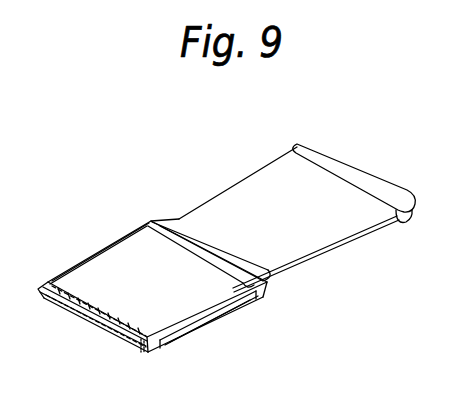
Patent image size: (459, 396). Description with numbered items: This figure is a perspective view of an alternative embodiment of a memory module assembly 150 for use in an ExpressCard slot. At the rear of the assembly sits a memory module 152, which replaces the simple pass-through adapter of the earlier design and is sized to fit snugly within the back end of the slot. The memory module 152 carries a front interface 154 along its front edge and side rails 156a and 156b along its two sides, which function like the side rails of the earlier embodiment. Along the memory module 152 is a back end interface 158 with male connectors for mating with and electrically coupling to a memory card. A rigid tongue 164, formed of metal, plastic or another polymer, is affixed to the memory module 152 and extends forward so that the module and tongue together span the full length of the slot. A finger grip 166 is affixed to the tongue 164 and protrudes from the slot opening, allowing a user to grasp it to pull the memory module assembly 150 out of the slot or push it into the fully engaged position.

The memory module assembly 150 is at (224, 153).
The memory module 152 is at (164, 276).
The front interface 154 is at (48, 292).
The side rail 156a is at (64, 269).
The side rail 156b is at (193, 328).
The back end interface 158 is at (180, 219).
The tongue 164 is at (302, 222).
The finger grip 166 is at (319, 149).